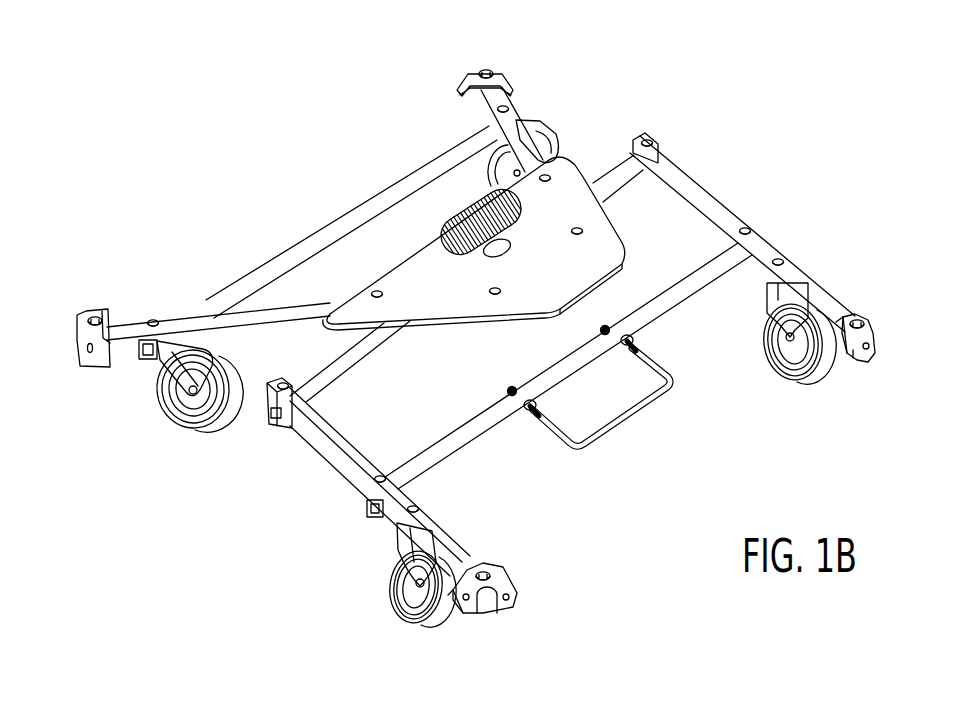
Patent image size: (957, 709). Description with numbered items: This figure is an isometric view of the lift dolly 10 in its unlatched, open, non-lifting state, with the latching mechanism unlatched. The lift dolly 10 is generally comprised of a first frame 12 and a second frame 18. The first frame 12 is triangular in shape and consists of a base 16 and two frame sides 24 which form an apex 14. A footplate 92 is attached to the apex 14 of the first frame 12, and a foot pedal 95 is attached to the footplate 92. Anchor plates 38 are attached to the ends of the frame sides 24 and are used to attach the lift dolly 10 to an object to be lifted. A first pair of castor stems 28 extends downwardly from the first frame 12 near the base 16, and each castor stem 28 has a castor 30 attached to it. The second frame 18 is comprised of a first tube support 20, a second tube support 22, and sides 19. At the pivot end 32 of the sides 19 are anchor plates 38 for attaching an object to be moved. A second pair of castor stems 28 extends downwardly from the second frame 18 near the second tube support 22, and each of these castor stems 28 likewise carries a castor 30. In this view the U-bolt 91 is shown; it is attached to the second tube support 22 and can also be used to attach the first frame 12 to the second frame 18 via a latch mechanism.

The lift dolly 10 is at (194, 157).
The first frame 12 is at (308, 150).
The apex 14 is at (489, 243).
The base 16 is at (307, 222).
The second frame 18 is at (742, 232).
The sides 19 is at (647, 404).
The first tube support 20 is at (631, 196).
The second tube support 22 is at (509, 409).
The frame sides 24 is at (361, 199).
The castor stems 28 is at (453, 337).
The castor 30 is at (474, 396).
The pivot end 32 is at (656, 503).
The anchor plates 38 is at (476, 335).
The U-bolt 91 is at (601, 386).
The footplate 92 is at (615, 275).
The foot pedal 95 is at (461, 222).